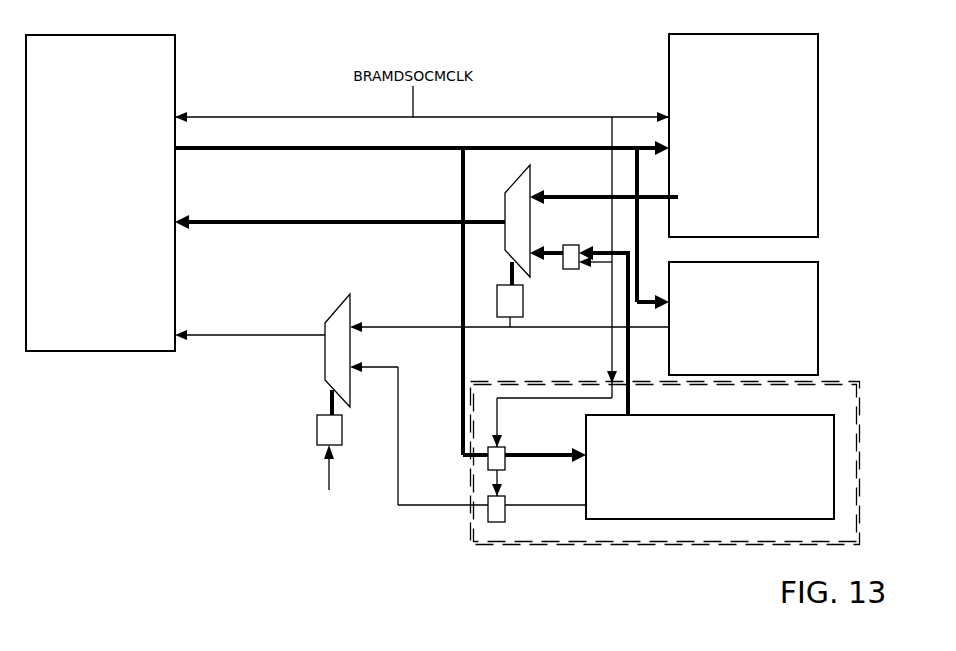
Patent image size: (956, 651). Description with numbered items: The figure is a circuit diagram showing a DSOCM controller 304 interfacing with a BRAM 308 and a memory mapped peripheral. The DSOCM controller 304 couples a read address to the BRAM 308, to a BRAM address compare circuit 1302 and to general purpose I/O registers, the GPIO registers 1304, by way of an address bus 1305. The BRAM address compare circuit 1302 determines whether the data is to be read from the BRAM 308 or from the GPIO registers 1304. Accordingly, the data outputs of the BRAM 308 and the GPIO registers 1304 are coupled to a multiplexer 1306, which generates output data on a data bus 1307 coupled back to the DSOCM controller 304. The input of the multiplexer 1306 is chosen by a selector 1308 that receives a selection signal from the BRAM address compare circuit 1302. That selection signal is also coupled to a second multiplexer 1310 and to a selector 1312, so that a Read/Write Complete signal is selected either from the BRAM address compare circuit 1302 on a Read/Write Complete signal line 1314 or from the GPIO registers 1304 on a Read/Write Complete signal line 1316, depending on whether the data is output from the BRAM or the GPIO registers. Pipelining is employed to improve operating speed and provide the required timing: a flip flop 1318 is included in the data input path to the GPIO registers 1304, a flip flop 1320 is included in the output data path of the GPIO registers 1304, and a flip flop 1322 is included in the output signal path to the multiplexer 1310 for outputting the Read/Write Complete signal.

The DSOCM controller 304 is at (176, 82).
The BRAM 308 is at (669, 98).
The BRAM address compare circuit 1302 is at (819, 318).
The GPIO registers 1304 is at (715, 519).
The address bus 1305 is at (575, 147).
The multiplexer 1306 is at (505, 207).
The data bus 1307 is at (348, 221).
The selector 1308 is at (497, 300).
The multiplexer 1310 is at (325, 370).
The selector 1312 is at (317, 432).
The Read/Write Complete signal line 1314 is at (392, 327).
The Read/Write Complete signal line 1316 is at (399, 458).
The flip flop 1318 is at (506, 448).
The flip flop 1320 is at (569, 245).
The flip flop 1322 is at (505, 498).